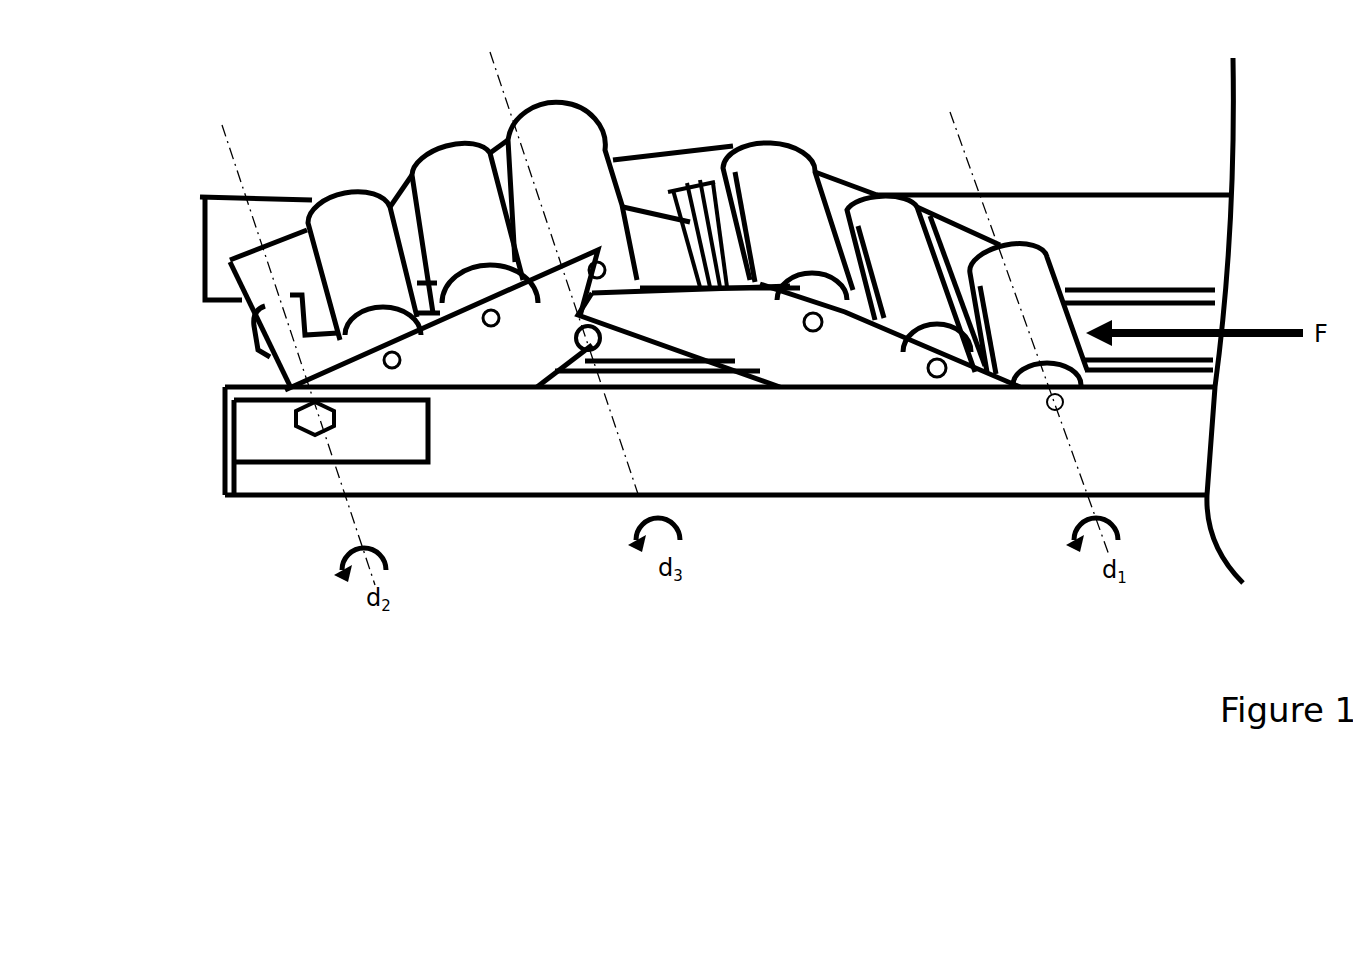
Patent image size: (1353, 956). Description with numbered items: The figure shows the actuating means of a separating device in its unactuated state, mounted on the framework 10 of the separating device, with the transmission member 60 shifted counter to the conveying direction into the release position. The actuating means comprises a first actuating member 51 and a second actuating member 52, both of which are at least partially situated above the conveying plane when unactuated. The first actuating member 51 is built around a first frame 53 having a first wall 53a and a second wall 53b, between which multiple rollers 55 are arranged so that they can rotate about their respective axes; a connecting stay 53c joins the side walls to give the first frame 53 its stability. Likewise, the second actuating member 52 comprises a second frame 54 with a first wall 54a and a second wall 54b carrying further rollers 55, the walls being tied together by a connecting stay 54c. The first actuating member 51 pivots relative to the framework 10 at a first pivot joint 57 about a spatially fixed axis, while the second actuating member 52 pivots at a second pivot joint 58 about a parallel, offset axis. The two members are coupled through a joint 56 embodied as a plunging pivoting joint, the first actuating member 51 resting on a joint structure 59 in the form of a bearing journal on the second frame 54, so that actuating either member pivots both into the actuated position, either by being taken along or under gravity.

The framework of the separating device 10 is at (709, 443).
The first actuating member 51 is at (714, 320).
The second actuating member 52 is at (468, 356).
The first frame 53 is at (660, 180).
The first wall 53a is at (832, 205).
The second wall 53b is at (838, 360).
The connecting stay 53c is at (700, 182).
The second frame 54 is at (262, 290).
The first wall 54a is at (300, 265).
The second wall 54b is at (530, 347).
The connecting stay 54c is at (225, 298).
The roller 55 is at (340, 218).
The joint 56 is at (600, 347).
The first pivot joint 57 is at (1051, 406).
The second pivot joint 58 is at (308, 416).
The joint structure 59 is at (587, 352).
The transmission member 60 is at (1128, 348).